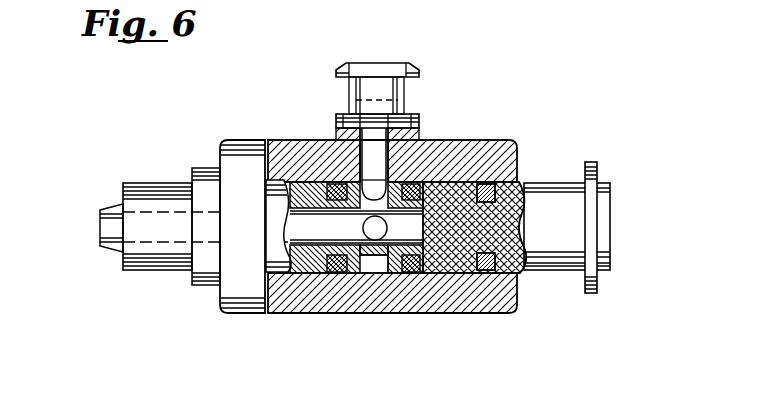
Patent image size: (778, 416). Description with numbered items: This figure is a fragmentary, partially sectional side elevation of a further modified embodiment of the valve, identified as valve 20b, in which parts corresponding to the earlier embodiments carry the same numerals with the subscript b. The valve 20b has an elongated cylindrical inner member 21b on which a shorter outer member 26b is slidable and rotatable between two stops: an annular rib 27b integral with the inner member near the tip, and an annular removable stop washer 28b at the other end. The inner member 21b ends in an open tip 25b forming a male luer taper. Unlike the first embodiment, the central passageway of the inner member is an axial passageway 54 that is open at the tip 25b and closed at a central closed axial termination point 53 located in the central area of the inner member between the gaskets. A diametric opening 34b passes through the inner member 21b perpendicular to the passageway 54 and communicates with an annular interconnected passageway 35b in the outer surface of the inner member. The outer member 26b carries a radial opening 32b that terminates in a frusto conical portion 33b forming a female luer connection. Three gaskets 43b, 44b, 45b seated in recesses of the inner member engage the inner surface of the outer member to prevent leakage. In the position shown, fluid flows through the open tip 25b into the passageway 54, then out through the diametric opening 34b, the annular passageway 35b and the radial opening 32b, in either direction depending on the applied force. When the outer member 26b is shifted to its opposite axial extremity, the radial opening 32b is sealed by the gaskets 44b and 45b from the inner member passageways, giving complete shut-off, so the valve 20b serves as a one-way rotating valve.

The valve 20b is at (482, 129).
The inner member 21b is at (537, 193).
The tip 25b is at (116, 215).
The outer member 26b is at (505, 145).
The annular rib 27b is at (193, 285).
The stop washer 28b is at (594, 291).
The radial opening 32b is at (380, 157).
The frusto conical portion 33b is at (390, 66).
The diametric opening 34b is at (398, 186).
The annular interconnected passageway 35b is at (345, 280).
The gasket 43b is at (315, 283).
The gasket 44b is at (411, 272).
The gasket 45b is at (486, 270).
The central closed axial termination point 53 is at (385, 238).
The axial passageway 54 is at (327, 235).